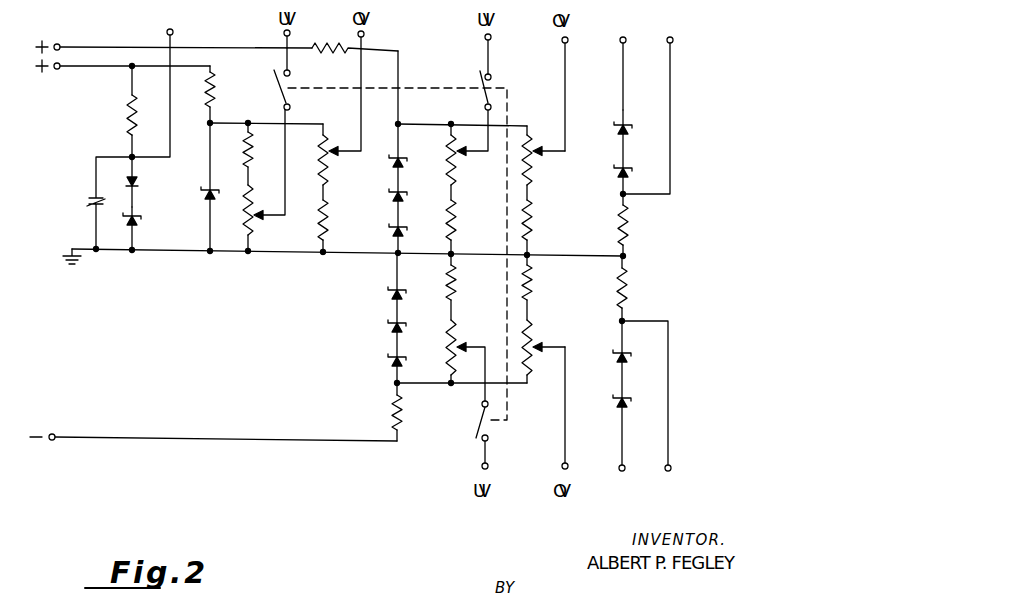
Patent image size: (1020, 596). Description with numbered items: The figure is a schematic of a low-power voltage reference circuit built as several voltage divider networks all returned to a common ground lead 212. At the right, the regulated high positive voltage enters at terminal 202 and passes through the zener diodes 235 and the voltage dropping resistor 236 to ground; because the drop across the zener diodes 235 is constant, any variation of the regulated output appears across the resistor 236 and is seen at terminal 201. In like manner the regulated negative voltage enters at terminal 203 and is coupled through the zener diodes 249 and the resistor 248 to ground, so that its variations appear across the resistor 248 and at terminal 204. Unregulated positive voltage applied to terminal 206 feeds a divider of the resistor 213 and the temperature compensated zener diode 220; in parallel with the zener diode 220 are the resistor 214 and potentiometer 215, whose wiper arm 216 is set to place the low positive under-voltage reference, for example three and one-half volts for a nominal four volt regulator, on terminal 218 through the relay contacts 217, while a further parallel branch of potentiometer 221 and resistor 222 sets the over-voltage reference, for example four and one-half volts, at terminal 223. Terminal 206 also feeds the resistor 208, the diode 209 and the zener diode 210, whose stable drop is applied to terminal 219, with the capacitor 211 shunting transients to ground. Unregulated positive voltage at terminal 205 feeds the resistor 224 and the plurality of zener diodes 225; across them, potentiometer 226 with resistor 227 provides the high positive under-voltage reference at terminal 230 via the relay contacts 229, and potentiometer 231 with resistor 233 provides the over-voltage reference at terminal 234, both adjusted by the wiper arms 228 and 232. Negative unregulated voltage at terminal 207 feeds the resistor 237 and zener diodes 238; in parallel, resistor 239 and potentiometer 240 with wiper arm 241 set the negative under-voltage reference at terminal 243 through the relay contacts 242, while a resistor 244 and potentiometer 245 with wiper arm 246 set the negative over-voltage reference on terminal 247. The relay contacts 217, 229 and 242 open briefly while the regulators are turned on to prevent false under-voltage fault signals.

The terminal 201 is at (675, 40).
The terminal 202 is at (630, 33).
The terminal 203 is at (622, 471).
The terminal 204 is at (668, 471).
The terminal 205 is at (60, 44).
The terminal 206 is at (56, 70).
The terminal 207 is at (55, 433).
The resistor 208 is at (126, 120).
The diode 209 is at (140, 178).
The temperature compensated zener diode 210 is at (142, 216).
The capacitor 211 is at (87, 202).
The ground lead 212 is at (288, 254).
The resistor 213 is at (215, 92).
The resistor 214 is at (263, 153).
The potentiometer 215 is at (241, 237).
The wiper arm 216 is at (285, 218).
The relay contacts 217 is at (270, 79).
The terminal 218 is at (283, 34).
The terminal 219 is at (167, 30).
The temperature compensated zener diode 220 is at (203, 198).
The potentiometer 221 is at (327, 171).
The resistor 222 is at (325, 236).
The terminal 223 is at (365, 34).
The resistor 224 is at (325, 55).
The temperature compensated zener diodes 225 is at (394, 233).
The potentiometer 226 is at (452, 176).
The resistor 227 is at (455, 234).
The wiper arm 228 is at (478, 147).
The relay contacts 229 is at (492, 79).
The terminal 230 is at (482, 38).
The potentiometer 231 is at (534, 178).
The wiper arm 232 is at (548, 146).
The resistor 233 is at (534, 225).
The terminal 234 is at (567, 44).
The zener diodes 235 is at (614, 160).
The voltage dropping resistor 236 is at (630, 224).
The resistor 237 is at (390, 402).
The temperature compensated zener diodes 238 is at (392, 356).
The resistor 239 is at (454, 295).
The potentiometer 240 is at (447, 373).
The wiper arm 241 is at (470, 347).
The relay contacts 242 is at (473, 430).
The terminal 243 is at (480, 470).
The resistor 244 is at (533, 293).
The potentiometer 245 is at (533, 331).
The wiper arm 246 is at (548, 355).
The terminal 247 is at (560, 468).
The resistor 248 is at (627, 294).
The zener diodes 249 is at (613, 392).